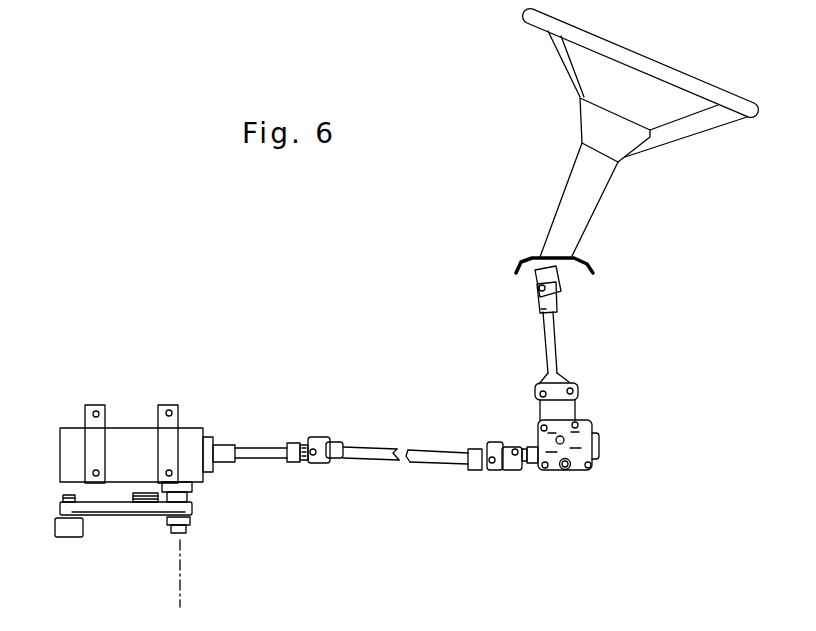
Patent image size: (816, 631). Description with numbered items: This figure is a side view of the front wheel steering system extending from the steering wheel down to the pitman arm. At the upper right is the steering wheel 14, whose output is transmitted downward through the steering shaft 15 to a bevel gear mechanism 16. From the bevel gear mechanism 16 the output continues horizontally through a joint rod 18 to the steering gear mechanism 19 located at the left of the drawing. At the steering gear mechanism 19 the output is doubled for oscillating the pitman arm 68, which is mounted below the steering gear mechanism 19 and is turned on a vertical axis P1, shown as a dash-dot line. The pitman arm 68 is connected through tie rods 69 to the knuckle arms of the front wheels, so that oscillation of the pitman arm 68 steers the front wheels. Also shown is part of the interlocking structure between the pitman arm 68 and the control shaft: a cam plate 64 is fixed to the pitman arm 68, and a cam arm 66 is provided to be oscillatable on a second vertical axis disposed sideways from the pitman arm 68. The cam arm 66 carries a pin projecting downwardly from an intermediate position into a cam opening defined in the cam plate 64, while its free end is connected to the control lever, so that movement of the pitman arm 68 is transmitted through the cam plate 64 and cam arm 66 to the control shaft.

The steering wheel 14 is at (655, 65).
The steering shaft 15 is at (557, 342).
The bevel gear mechanism 16 is at (575, 466).
The joint rod 18 is at (437, 450).
The steering gear mechanism 19 is at (130, 437).
The cam arm 66 is at (148, 505).
The cam plate 64 is at (148, 503).
The pitman arm 68 is at (110, 512).
The tie rods 69 is at (67, 536).
The vertical axis P1 is at (180, 575).